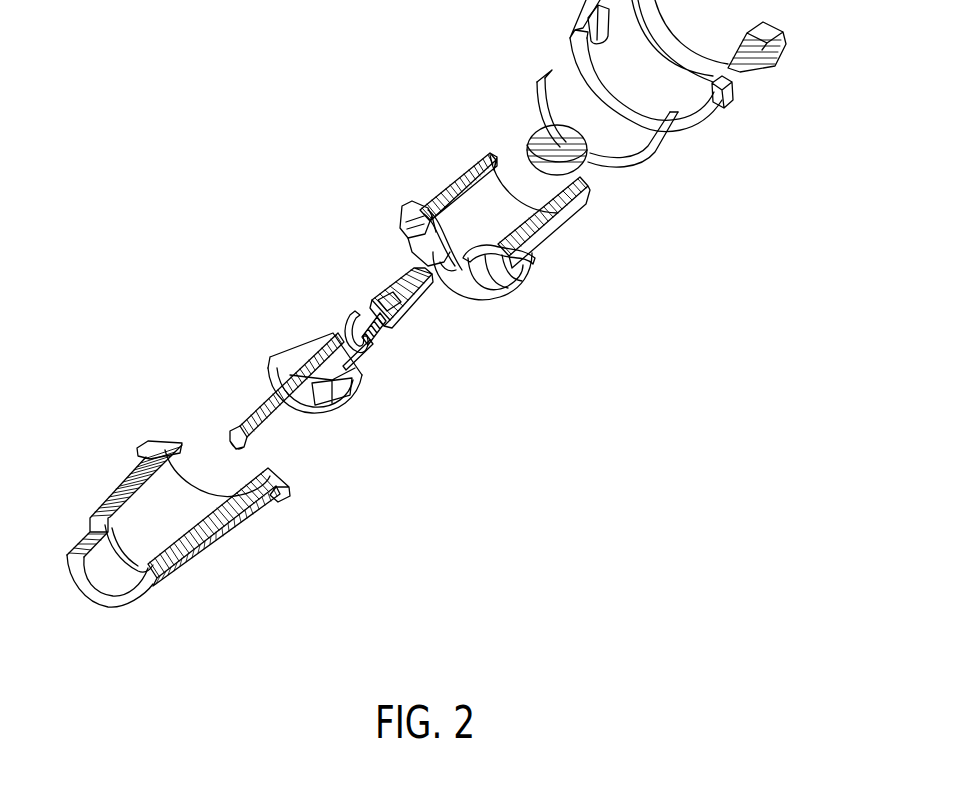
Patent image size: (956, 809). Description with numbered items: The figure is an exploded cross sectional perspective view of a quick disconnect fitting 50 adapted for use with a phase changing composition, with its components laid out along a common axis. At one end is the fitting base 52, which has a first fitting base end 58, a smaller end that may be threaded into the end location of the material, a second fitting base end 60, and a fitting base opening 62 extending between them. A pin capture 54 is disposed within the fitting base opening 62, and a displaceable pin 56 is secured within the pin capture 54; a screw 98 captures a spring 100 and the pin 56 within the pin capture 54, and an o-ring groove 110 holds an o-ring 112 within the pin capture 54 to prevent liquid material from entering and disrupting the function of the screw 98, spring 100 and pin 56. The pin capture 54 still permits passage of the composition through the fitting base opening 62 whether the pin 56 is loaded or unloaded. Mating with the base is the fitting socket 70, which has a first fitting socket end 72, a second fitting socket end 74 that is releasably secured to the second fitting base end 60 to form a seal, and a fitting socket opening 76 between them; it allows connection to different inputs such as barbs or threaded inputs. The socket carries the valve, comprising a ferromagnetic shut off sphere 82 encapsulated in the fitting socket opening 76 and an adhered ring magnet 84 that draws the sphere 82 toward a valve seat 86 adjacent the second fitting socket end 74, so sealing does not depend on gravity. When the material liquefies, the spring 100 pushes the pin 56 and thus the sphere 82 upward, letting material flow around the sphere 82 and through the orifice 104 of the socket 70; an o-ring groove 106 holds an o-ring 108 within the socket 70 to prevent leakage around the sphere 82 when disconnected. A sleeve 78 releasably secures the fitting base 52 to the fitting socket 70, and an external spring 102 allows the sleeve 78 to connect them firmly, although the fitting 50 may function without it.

The disconnect fitting 50 is at (340, 120).
The fitting base 52 is at (220, 538).
The pin capture 54 is at (287, 362).
The displaceable pin 56 is at (388, 290).
The first fitting base end 58 is at (125, 602).
The second fitting base end 60 is at (273, 480).
The fitting base opening 62 is at (181, 478).
The fitting socket 70 is at (550, 230).
The first fitting socket end 72 is at (484, 150).
The second fitting socket end 74 is at (490, 292).
The fitting socket opening 76 is at (466, 192).
The sleeve 78 is at (748, 78).
The ferromagnetic sphere 82 is at (532, 140).
The ring magnet 84 is at (420, 255).
The valve seat 86 is at (407, 214).
The screw 98 is at (263, 410).
The spring 100 is at (387, 340).
The external spring 102 is at (653, 158).
The orifice 104 is at (443, 262).
The o-ring groove 106 is at (436, 248).
The o-ring 108 is at (522, 265).
The o-ring groove 110 is at (336, 331).
The o-ring 112 is at (367, 365).